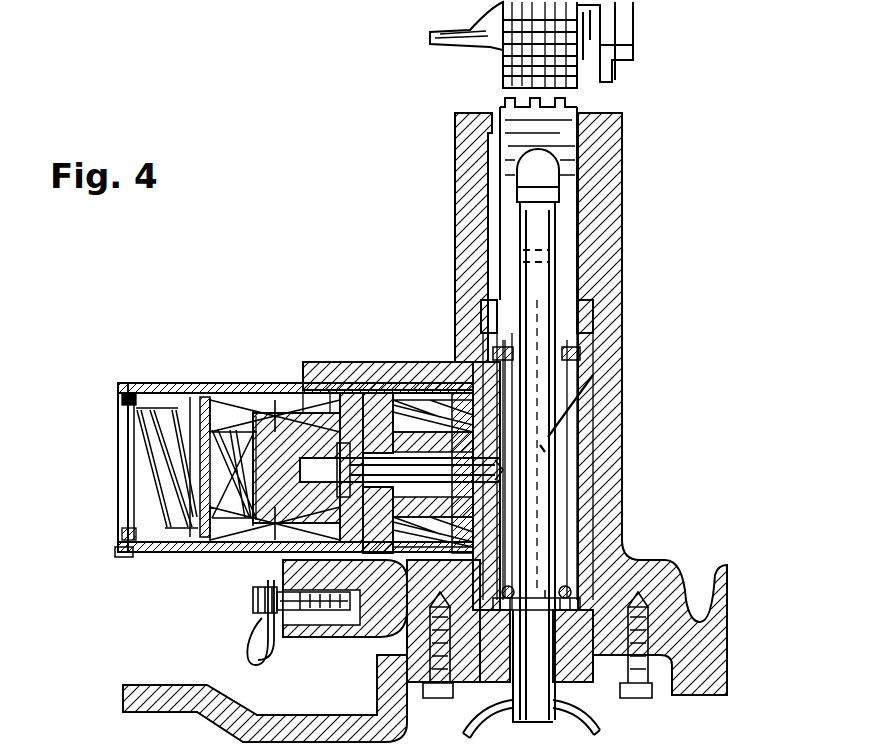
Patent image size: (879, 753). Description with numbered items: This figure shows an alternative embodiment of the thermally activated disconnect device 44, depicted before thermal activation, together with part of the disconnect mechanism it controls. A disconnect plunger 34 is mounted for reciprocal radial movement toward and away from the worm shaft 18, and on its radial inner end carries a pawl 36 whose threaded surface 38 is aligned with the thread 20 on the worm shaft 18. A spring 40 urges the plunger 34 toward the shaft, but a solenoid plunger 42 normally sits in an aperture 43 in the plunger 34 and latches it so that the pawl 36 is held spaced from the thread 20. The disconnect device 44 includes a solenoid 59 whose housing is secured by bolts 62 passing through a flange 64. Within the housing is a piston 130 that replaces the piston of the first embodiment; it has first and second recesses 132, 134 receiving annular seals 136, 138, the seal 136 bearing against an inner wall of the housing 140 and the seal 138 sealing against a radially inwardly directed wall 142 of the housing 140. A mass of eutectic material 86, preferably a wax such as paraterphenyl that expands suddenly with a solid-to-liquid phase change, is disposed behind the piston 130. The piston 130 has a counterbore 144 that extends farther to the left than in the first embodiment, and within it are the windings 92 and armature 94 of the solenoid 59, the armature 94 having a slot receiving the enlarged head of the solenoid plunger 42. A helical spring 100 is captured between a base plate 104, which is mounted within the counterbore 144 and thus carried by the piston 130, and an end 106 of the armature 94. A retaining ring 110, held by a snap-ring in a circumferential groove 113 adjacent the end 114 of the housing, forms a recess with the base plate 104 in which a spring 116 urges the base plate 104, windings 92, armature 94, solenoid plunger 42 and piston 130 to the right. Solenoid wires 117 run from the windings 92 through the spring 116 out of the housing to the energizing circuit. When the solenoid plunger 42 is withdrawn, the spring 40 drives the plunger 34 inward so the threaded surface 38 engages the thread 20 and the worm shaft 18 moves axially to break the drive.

The worm shaft 18 is at (435, 52).
The thread 20 is at (600, 90).
The disconnect plunger 34 is at (543, 292).
The pawl 36 is at (565, 170).
The threaded surface 38 is at (580, 97).
The spring 40 is at (580, 375).
The solenoid plunger 42 is at (633, 487).
The aperture 43 is at (495, 465).
The disconnect device 44 is at (240, 390).
The solenoid 59 is at (255, 580).
The bolts 62 is at (255, 627).
The flange 64 is at (290, 640).
The eutectic material 86 is at (413, 390).
The windings 92 is at (260, 387).
The armature 94 is at (285, 390).
The helical spring 100 is at (280, 465).
The base plate 104 is at (185, 555).
The end of the armature 106 is at (212, 545).
The retaining ring 110 is at (120, 520).
The circumferential groove 113 is at (120, 535).
The end of the housing 114 is at (115, 548).
The spring 116 is at (153, 390).
The solenoid wires 117 is at (180, 443).
The piston 130 is at (337, 390).
The first recess 132 is at (367, 390).
The second recess 134 is at (447, 390).
The annular seal 136 is at (370, 390).
The annular seal 138 is at (500, 520).
The housing 140 is at (140, 390).
The radially inwardly directed wall 142 is at (346, 598).
The counterbore 144 is at (180, 390).